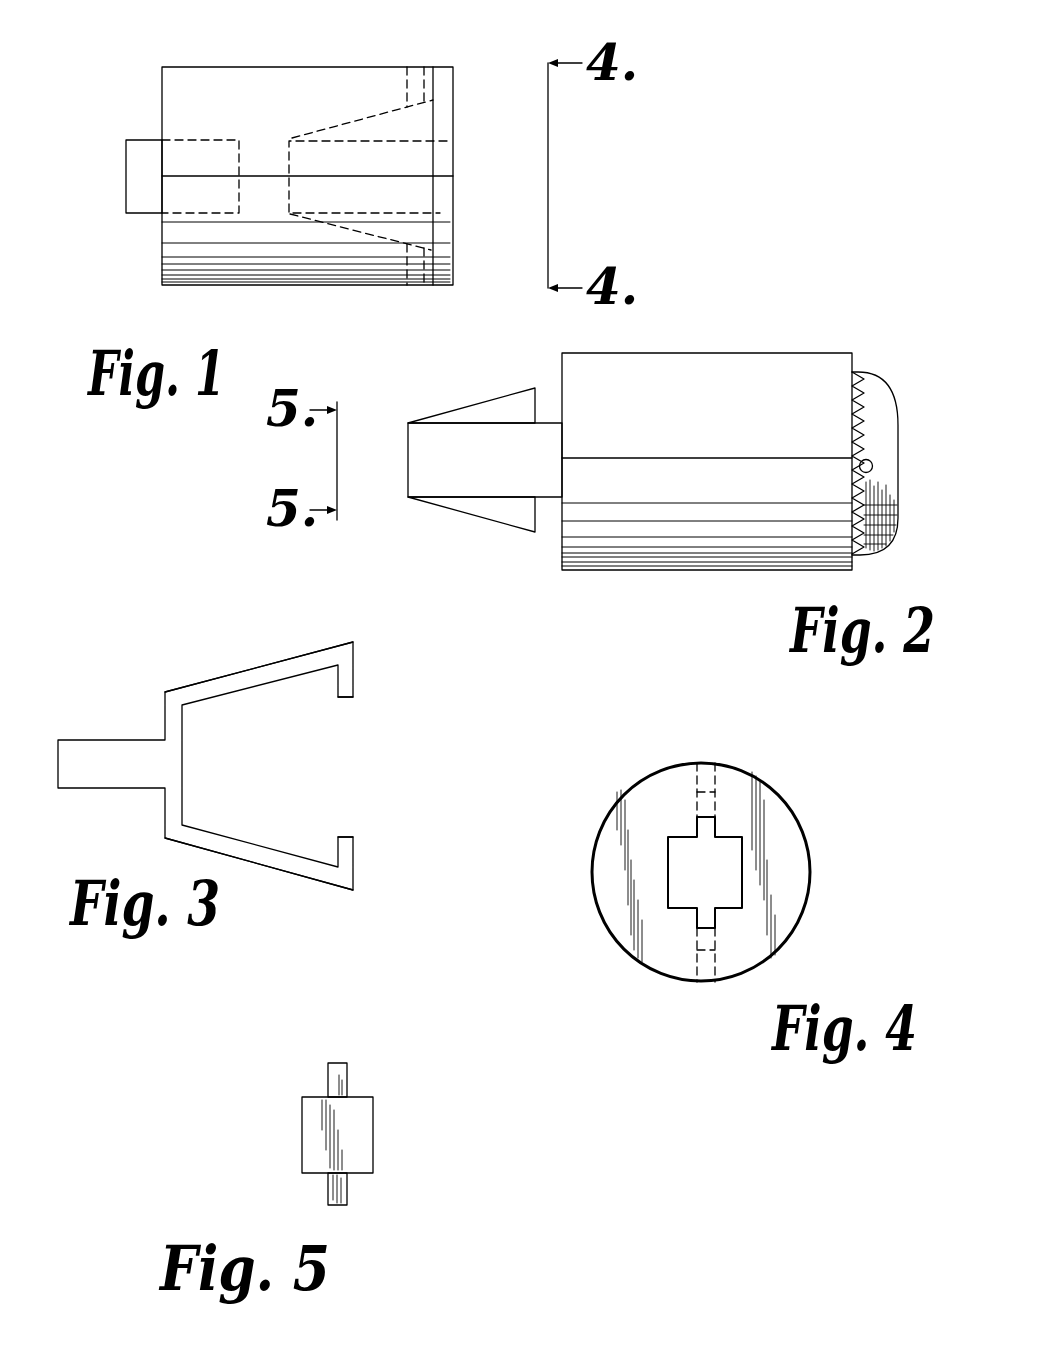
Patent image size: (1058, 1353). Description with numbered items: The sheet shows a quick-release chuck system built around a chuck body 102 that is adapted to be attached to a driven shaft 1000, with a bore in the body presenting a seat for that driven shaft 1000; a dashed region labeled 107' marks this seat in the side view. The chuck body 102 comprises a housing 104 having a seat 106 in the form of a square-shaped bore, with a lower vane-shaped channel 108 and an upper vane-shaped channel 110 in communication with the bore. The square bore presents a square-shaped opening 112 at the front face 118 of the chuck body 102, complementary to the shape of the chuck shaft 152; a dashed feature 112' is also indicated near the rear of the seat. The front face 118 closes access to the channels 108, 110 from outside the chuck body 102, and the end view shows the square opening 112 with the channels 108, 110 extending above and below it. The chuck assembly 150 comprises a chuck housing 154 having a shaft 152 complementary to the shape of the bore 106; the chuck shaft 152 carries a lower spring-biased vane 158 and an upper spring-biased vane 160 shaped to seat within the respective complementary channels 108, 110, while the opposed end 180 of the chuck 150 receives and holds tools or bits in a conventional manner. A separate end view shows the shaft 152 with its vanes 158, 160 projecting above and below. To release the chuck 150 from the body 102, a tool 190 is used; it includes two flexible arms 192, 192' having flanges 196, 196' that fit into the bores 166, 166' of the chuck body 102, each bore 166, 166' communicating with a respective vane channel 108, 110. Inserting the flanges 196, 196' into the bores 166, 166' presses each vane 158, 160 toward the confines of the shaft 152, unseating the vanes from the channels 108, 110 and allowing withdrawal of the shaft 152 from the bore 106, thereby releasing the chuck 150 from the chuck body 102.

In FIG. 1, the chuck body 102 is at (150, 40).
In FIG. 1, the housing 104 is at (287, 263).
In FIG. 1, the seat 106 is at (289, 142).
In FIG. 1, the prong recess 107' is at (189, 236).
In FIG. 1, the lower vane-shaped channel 108 is at (363, 235).
In FIG. 4, the lower vane-shaped channel 108 is at (718, 920).
In FIG. 1, the upper vane-shaped channel 110 is at (343, 122).
In FIG. 4, the upper vane-shaped channel 110 is at (697, 763).
In FIG. 1, the square-shaped opening 112 is at (411, 166).
In FIG. 4, the square-shaped opening 112 is at (642, 872).
In FIG. 1, the cavity end 112' is at (480, 228).
In FIG. 1, the front face 118 is at (453, 110).
In FIG. 4, the front face 118 is at (772, 838).
In FIG. 1, the bore 166 is at (401, 62).
In FIG. 1, the bore 166' is at (450, 288).
In FIG. 1, the driven shaft 1000 is at (138, 215).
In FIG. 2, the chuck assembly 150 is at (818, 353).
In FIG. 2, the chuck shaft 152 is at (408, 470).
In FIG. 5, the chuck shaft 152 is at (318, 1125).
In FIG. 2, the chuck housing 154 is at (745, 433).
In FIG. 2, the lower spring-biased vane 158 is at (466, 520).
In FIG. 5, the lower spring-biased vane 158 is at (340, 1205).
In FIG. 2, the upper spring-biased vane 160 is at (490, 400).
In FIG. 5, the upper spring-biased vane 160 is at (345, 1063).
In FIG. 2, the opposed end 180 is at (875, 378).
In FIG. 3, the tool 190 is at (138, 672).
In FIG. 3, the flexible arm 192 is at (259, 690).
In FIG. 3, the flexible arm 192' is at (259, 835).
In FIG. 3, the flange 196 is at (380, 692).
In FIG. 3, the flange 196' is at (382, 859).